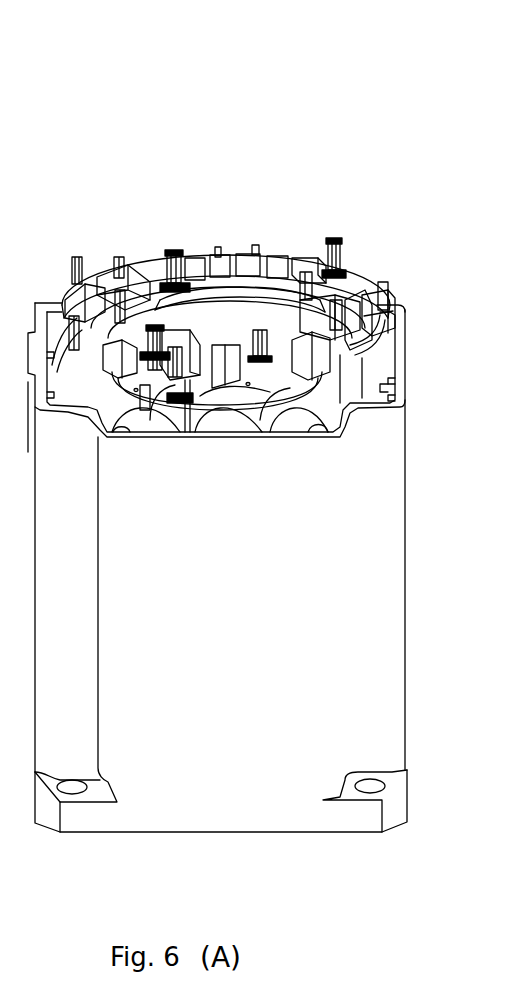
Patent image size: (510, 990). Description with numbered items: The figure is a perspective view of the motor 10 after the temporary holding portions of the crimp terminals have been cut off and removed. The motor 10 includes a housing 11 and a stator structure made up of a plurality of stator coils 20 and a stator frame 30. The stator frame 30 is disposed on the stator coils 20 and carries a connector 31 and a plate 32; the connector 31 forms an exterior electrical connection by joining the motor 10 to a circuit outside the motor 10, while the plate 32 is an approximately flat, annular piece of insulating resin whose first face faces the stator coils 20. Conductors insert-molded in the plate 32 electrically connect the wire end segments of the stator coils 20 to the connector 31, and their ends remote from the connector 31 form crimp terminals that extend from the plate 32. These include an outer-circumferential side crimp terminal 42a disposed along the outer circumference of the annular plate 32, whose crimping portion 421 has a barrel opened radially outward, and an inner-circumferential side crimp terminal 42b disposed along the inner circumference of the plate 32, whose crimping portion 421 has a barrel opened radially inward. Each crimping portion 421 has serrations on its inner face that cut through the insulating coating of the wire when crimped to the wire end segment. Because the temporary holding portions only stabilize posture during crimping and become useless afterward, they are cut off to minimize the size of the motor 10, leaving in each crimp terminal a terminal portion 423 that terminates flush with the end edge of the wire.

The motor 10 is at (432, 117).
The housing 11 is at (406, 731).
The stator coils 20 is at (403, 328).
The stator frame 30 is at (269, 266).
The connector 31 is at (237, 230).
The plate 32 is at (377, 290).
The outer-circumferential side crimp terminal 42a is at (380, 144).
The inner-circumferential side crimp terminal 42b is at (115, 159).
The crimping portion 421 is at (177, 257).
The terminal portion 423 is at (173, 255).